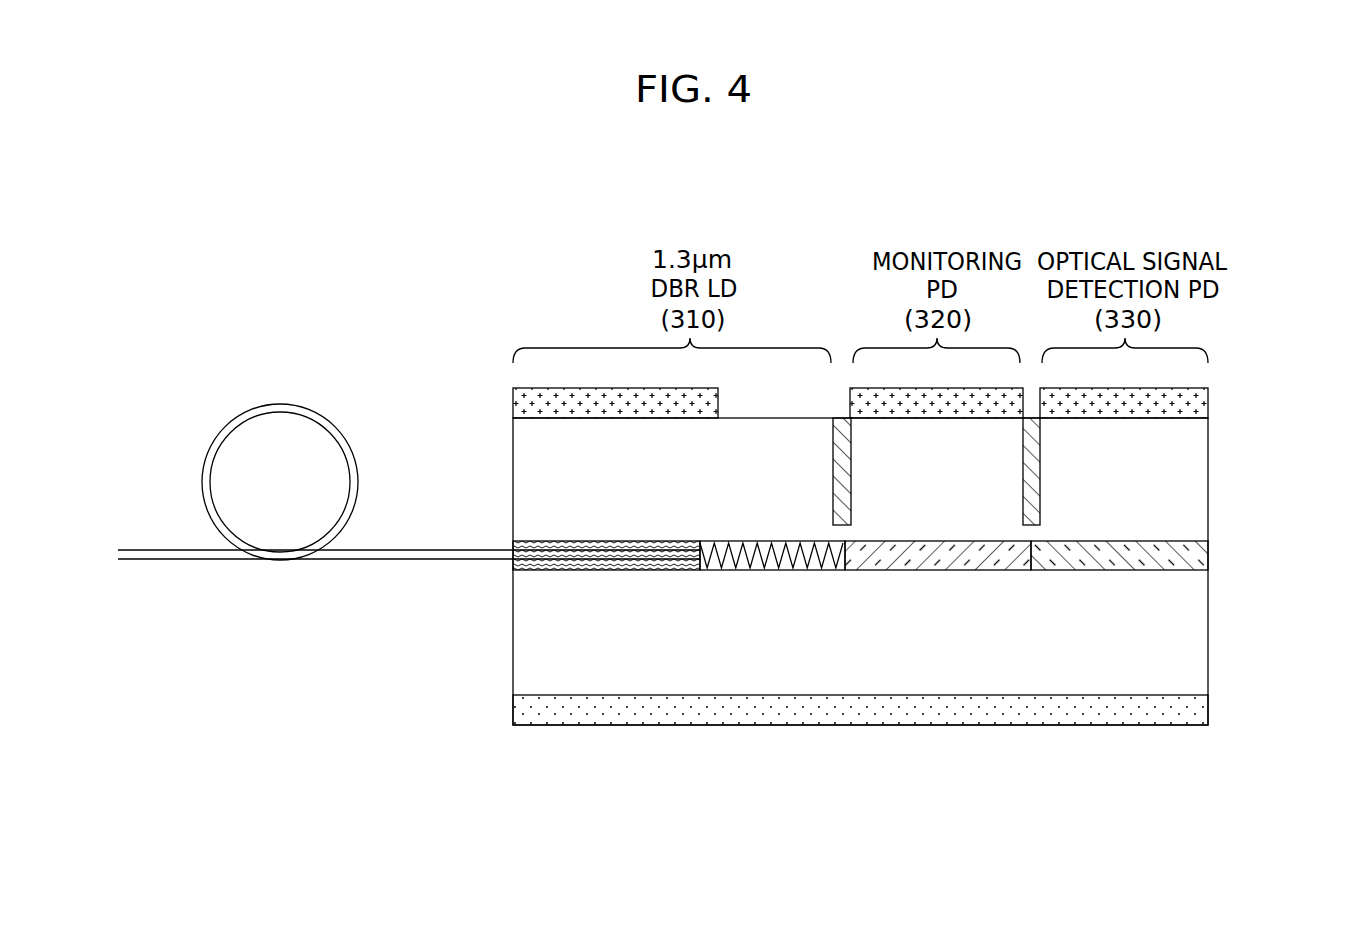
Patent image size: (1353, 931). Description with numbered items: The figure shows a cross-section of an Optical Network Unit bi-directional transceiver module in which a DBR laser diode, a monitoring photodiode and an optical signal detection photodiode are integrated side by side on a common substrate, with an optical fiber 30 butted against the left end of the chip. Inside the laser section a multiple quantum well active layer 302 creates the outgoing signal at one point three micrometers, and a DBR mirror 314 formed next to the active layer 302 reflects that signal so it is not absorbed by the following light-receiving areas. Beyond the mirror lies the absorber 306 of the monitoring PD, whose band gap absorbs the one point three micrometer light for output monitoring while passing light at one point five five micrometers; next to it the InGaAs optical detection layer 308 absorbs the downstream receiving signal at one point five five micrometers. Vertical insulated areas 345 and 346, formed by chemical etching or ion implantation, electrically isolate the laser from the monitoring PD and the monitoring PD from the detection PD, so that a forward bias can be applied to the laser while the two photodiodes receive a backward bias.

The optical fiber 30 is at (280, 404).
The active layer 302 is at (530, 562).
The 1.3 μm DBR mirror 314 is at (770, 570).
The absorber of the monitoring PD 306 is at (940, 570).
The InGaAs optical detection layer 308 is at (1115, 570).
The insulated area 345 is at (852, 493).
The insulated area 346 is at (1041, 451).